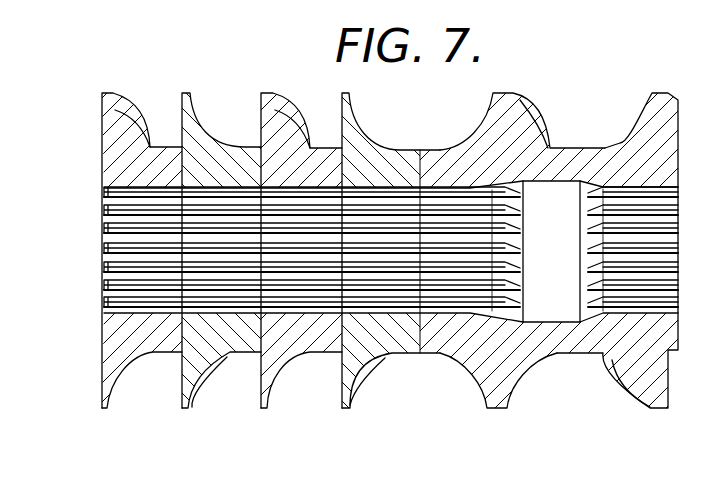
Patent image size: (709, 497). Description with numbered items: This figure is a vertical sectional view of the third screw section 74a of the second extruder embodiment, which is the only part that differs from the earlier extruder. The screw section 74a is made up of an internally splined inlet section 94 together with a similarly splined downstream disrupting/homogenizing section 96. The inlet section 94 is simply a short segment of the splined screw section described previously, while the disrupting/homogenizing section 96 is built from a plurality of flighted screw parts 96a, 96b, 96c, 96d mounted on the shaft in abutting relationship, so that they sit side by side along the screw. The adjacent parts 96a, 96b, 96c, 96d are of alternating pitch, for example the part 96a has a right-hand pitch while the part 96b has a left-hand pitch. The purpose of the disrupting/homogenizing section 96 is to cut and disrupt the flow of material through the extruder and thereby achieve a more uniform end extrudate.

The disrupting/homogenizing section 96 is at (98, 92).
The flighted screw part 96a is at (348, 120).
The flighted screw part 96b is at (282, 107).
The flighted screw part 96c is at (205, 142).
The flighted screw part 96d is at (122, 110).
The third screw section 74a is at (527, 90).
The internally splined inlet section 94 is at (643, 133).